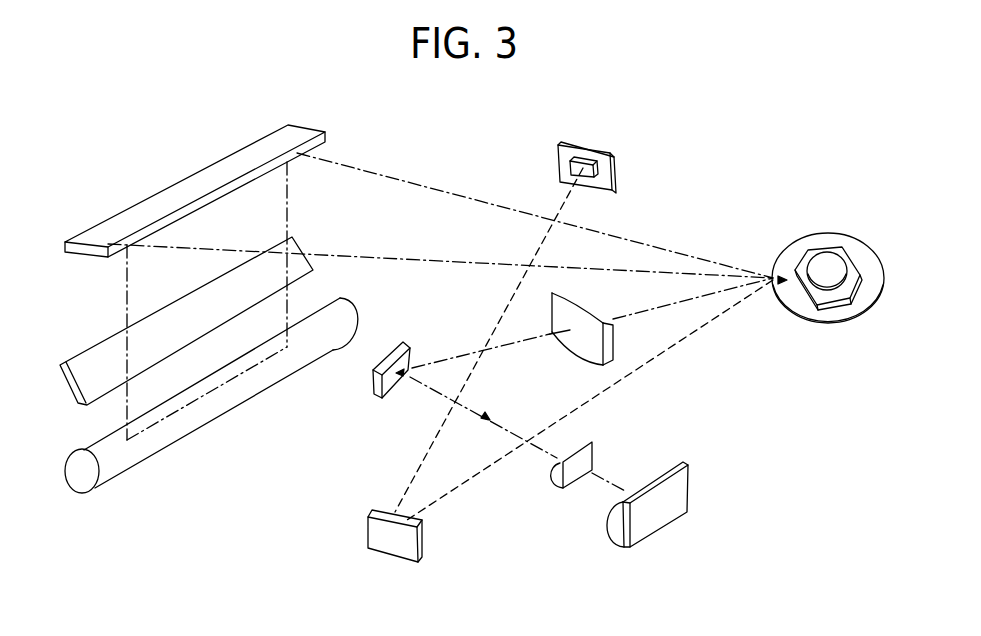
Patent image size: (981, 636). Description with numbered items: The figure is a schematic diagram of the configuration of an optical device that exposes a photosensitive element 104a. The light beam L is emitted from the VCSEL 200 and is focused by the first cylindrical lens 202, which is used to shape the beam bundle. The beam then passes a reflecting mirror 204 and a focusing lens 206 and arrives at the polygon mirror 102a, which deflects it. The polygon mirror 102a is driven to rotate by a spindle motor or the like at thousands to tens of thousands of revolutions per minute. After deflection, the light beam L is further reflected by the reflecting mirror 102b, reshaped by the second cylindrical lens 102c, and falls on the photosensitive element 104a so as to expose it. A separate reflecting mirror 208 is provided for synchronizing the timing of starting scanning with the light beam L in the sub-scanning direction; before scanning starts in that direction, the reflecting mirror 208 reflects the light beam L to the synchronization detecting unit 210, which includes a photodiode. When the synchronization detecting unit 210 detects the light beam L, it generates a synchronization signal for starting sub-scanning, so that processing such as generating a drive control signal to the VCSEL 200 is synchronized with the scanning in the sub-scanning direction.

The polygon mirror 102a is at (818, 248).
The reflecting mirror 102b is at (152, 202).
The second cylindrical lens 102c is at (95, 350).
The photosensitive element 104a is at (357, 307).
The VCSEL 200 is at (682, 491).
The first cylindrical lens 202 is at (590, 458).
The reflecting mirror 204 is at (374, 382).
The focusing lens 206 is at (613, 338).
The reflecting mirror 208 is at (410, 543).
The synchronization detecting unit 210 is at (610, 179).
The light beam L is at (488, 416).